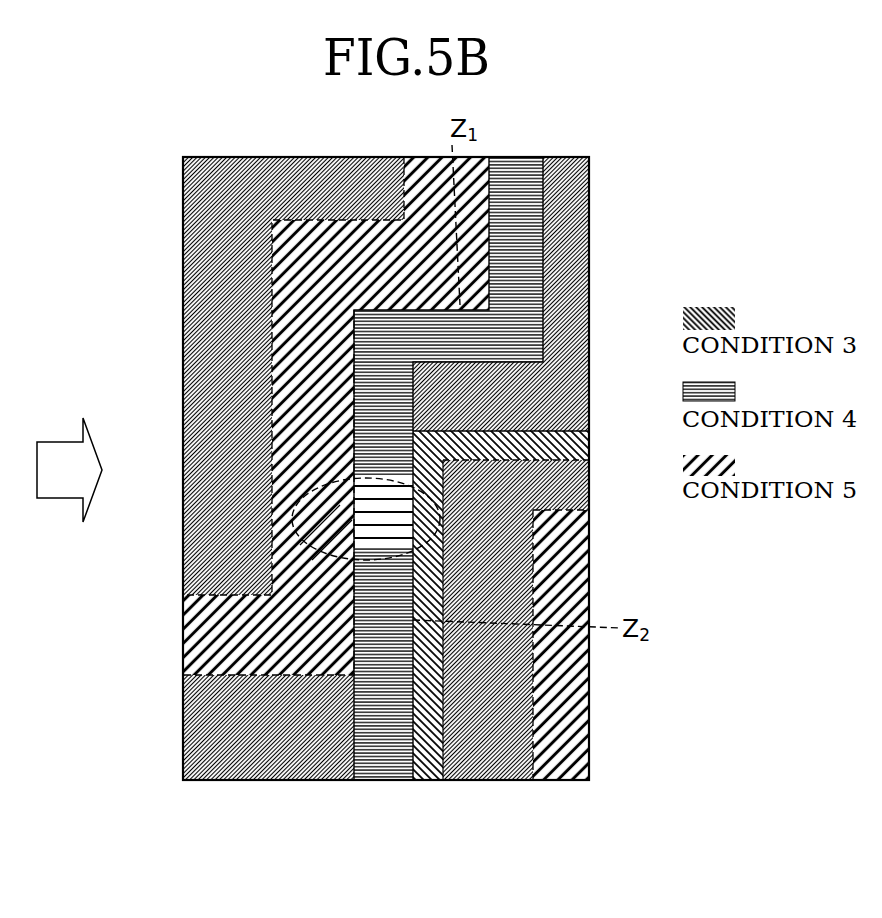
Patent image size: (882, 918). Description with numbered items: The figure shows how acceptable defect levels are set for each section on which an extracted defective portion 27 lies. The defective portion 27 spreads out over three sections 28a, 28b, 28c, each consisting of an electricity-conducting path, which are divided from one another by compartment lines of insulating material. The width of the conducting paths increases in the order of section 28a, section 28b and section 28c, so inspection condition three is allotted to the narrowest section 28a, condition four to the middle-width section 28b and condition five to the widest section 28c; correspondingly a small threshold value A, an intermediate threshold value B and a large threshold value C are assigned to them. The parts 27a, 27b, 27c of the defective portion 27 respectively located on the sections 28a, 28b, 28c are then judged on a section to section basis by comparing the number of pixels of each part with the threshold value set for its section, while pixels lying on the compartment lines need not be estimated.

The defective portion 27 is at (300, 503).
The part of the defective portion 27a is at (426, 492).
The part of the defective portion 27b is at (387, 498).
The part of the defective portion 27c is at (310, 558).
The section 28a is at (438, 742).
The section 28b is at (387, 780).
The section 28c is at (305, 405).